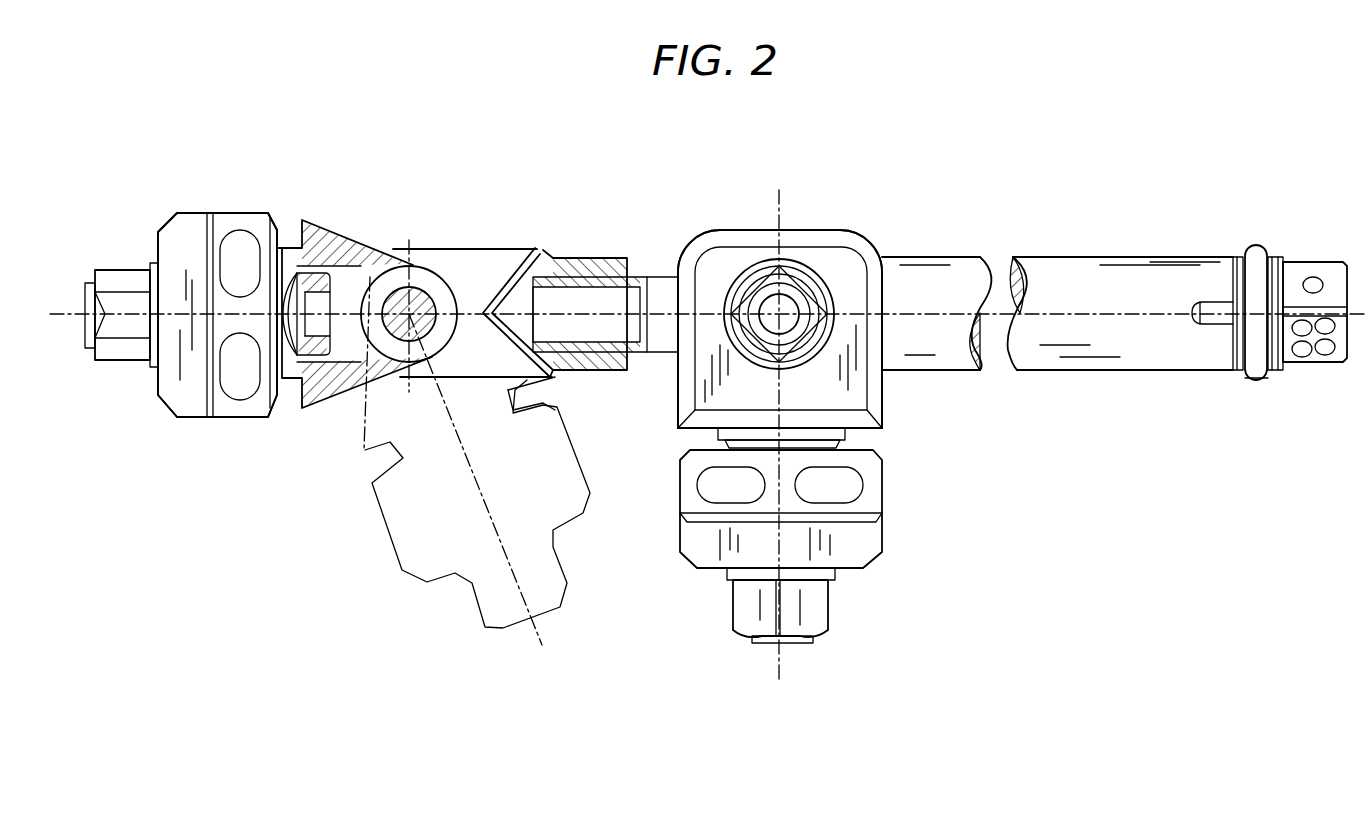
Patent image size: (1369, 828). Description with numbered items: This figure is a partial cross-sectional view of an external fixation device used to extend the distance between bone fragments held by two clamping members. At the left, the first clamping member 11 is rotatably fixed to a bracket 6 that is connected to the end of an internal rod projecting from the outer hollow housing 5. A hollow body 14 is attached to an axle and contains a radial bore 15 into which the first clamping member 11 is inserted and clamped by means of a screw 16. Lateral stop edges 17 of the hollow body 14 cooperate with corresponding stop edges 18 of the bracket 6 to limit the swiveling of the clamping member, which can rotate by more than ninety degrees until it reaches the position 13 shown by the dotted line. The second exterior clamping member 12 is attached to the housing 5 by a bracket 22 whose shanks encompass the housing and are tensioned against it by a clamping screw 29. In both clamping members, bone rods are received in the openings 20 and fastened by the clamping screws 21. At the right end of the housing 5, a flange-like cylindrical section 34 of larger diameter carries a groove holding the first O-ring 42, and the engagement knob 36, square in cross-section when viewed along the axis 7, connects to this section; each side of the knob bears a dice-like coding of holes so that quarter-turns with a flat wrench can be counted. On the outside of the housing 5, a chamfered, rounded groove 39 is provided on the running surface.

The housing 5 is at (1076, 270).
The bracket 6 is at (472, 258).
The axis 7 is at (1080, 310).
The first clamping member 11 is at (185, 180).
The second clamping member 12 is at (890, 615).
The position 13 is at (473, 602).
The hollow body 14 is at (318, 238).
The bore 15 is at (293, 270).
The screw 16 is at (305, 350).
The lateral stop edges 17 is at (370, 248).
The stop edges 18 is at (518, 258).
The openings 20 is at (240, 395).
The clamping screws 21 is at (118, 355).
The bracket 22 is at (718, 262).
The clamping screw 29 is at (808, 300).
The cylindrical section 34 is at (1242, 375).
The engagement knob 36 is at (1302, 270).
The groove 39 is at (1190, 313).
The first O-ring 42 is at (1255, 250).